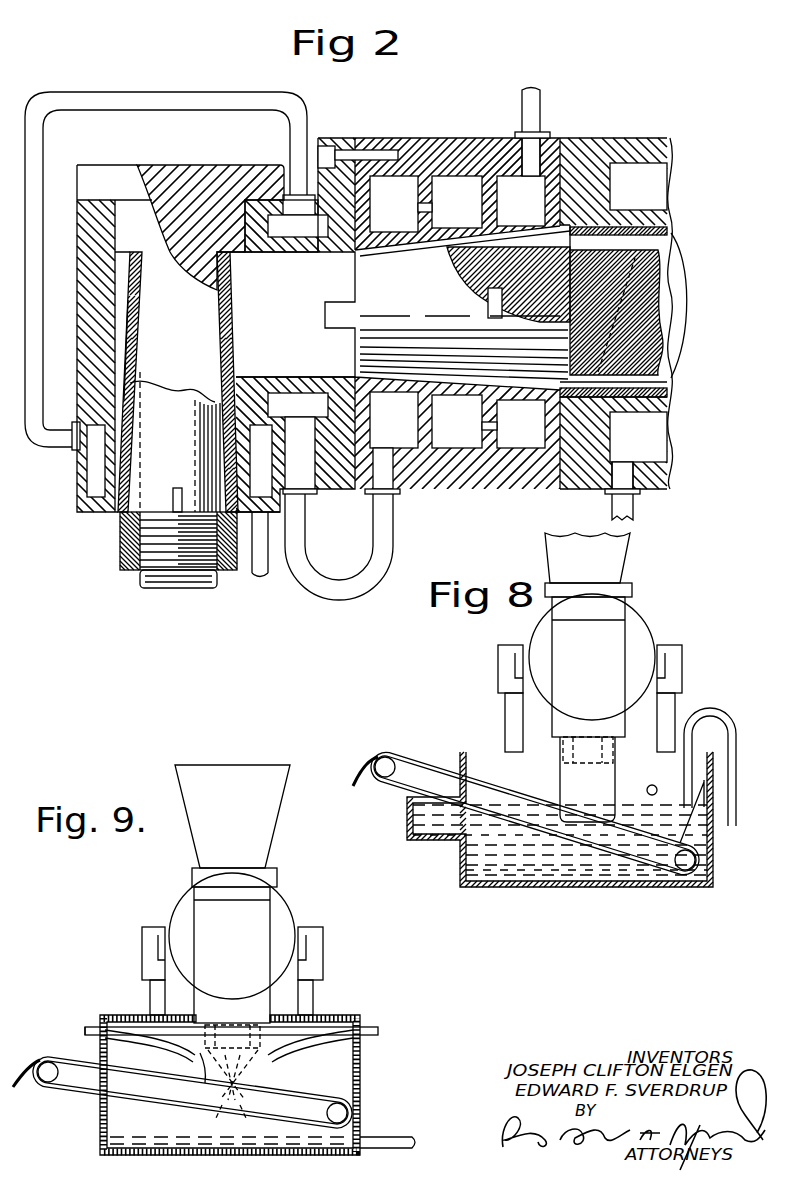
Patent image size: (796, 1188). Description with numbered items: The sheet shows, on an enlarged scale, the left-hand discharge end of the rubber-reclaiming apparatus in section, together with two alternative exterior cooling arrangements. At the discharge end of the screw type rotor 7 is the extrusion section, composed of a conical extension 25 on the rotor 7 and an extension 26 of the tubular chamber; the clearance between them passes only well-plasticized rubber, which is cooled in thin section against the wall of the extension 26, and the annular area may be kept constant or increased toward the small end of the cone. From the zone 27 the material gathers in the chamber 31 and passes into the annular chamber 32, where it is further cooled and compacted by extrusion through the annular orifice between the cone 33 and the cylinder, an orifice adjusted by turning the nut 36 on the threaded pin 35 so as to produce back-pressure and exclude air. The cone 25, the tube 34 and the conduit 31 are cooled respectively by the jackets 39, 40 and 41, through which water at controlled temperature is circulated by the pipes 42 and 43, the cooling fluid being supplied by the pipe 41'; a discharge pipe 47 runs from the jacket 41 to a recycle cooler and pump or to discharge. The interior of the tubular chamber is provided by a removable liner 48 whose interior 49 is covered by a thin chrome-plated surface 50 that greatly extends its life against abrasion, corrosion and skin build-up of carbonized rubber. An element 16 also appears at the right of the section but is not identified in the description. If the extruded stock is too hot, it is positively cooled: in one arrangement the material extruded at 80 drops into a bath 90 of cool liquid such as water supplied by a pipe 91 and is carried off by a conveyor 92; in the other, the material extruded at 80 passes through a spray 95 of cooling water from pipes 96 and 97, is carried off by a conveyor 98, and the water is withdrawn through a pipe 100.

In FIG. 2, the screw type rotor 7 is at (578, 355).
In FIG. 2, the pipe 16 is at (630, 510).
In FIG. 2, the conical extension 25 is at (383, 337).
In FIG. 2, the extension of the chamber 26 is at (410, 250).
In FIG. 2, the zone 27 is at (503, 378).
In FIG. 2, the chamber 31 is at (276, 326).
In FIG. 2, the annular chamber 32 is at (122, 328).
In FIG. 2, the cone 33 is at (143, 392).
In FIG. 2, the tube 34 is at (120, 287).
In FIG. 2, the threaded pin 35 is at (170, 583).
In FIG. 2, the nut 36 is at (125, 533).
In FIG. 2, the jacket 39 is at (397, 175).
In FIG. 2, the jacket 40 is at (315, 229).
In FIG. 2, the jacket 41 is at (67, 463).
In FIG. 2, the pipe 41' is at (555, 132).
In FIG. 2, the pipe 42 is at (305, 528).
In FIG. 2, the pipe 43 is at (307, 104).
In FIG. 2, the discharge pipe 47 is at (255, 574).
In FIG. 2, the removable liner 48 is at (670, 384).
In FIG. 2, the interior of the liner 49 is at (660, 382).
In FIG. 2, the chrome-plated surface 50 is at (668, 240).
In FIG. 8, the extruded stock 80 is at (603, 781).
In FIG. 9, the extruded stock 80 is at (290, 1040).
In FIG. 8, the bath 90 is at (474, 862).
In FIG. 8, the pipe 91 is at (737, 752).
In FIG. 8, the conveyor 92 is at (380, 790).
In FIG. 9, the spray 95 is at (255, 1084).
In FIG. 9, the pipe 96 is at (370, 1030).
In FIG. 9, the pipe 97 is at (85, 1028).
In FIG. 9, the conveyor 98 is at (90, 1095).
In FIG. 9, the pipe 100 is at (382, 1137).